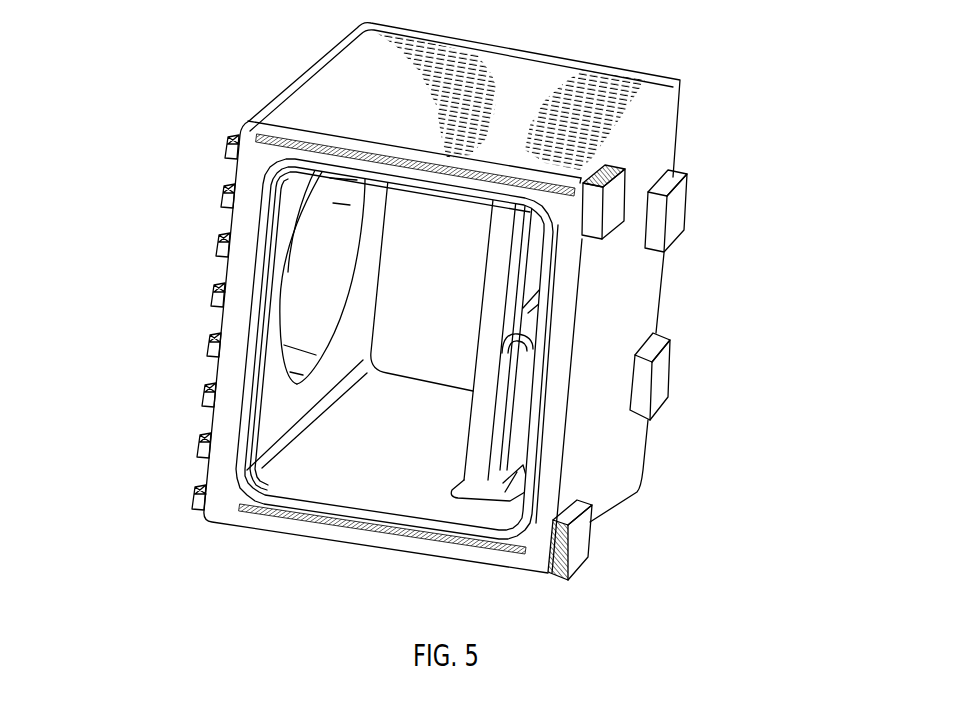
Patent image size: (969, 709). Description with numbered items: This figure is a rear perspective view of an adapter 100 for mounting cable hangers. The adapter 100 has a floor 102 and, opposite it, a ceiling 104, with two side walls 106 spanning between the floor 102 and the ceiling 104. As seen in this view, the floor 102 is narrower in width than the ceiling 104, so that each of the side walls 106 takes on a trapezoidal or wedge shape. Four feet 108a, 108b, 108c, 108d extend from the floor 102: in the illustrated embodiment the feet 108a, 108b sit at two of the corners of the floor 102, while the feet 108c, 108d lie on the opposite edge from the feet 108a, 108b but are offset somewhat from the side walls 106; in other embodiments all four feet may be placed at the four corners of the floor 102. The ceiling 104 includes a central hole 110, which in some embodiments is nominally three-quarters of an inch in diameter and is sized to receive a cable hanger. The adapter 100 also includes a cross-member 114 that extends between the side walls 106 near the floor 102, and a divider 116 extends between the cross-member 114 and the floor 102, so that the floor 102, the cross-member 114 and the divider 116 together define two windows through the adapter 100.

The adapter 100 is at (763, 172).
The floor 102 is at (632, 297).
The ceiling 104 is at (213, 325).
The side walls 106 is at (660, 92).
The foot 108a is at (613, 189).
The foot 108b is at (580, 558).
The foot 108c is at (683, 216).
The foot 108d is at (657, 378).
The central hole 110 is at (300, 257).
The cross-member 114 is at (493, 430).
The divider 116 is at (522, 331).